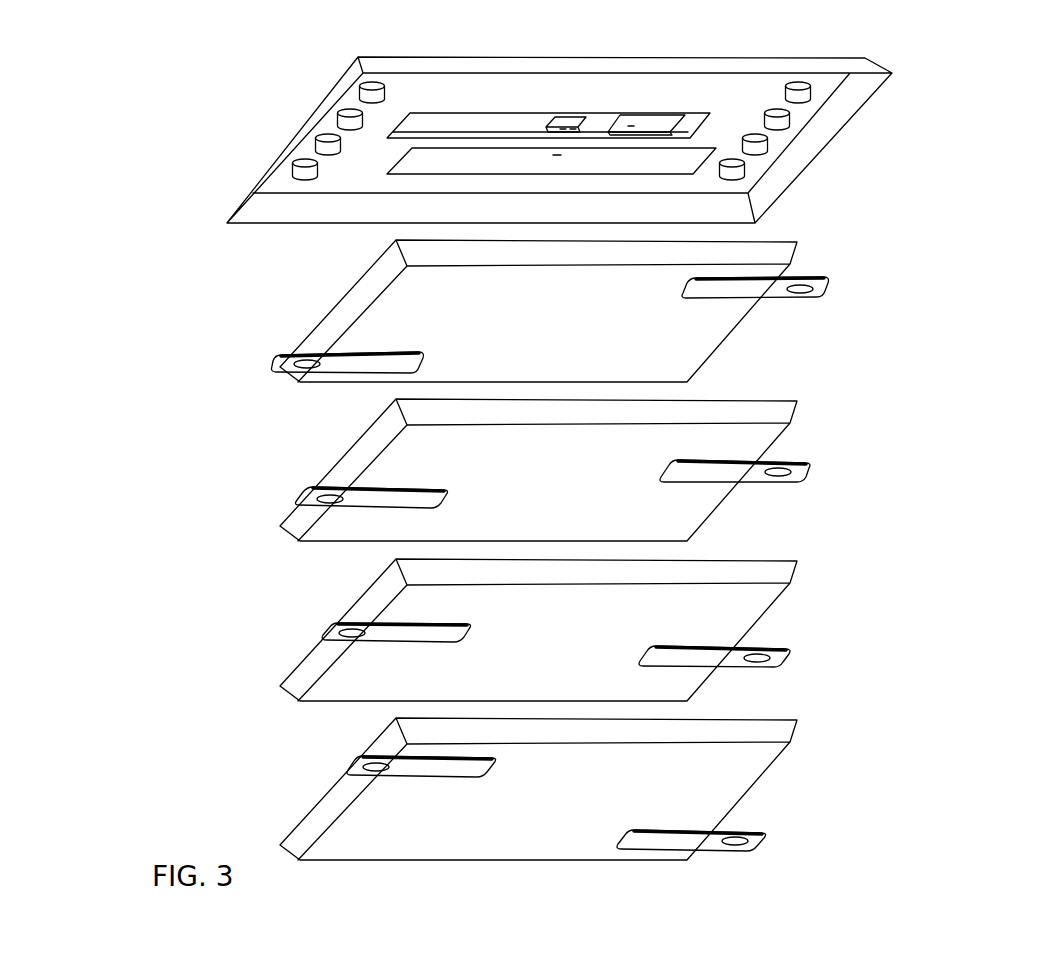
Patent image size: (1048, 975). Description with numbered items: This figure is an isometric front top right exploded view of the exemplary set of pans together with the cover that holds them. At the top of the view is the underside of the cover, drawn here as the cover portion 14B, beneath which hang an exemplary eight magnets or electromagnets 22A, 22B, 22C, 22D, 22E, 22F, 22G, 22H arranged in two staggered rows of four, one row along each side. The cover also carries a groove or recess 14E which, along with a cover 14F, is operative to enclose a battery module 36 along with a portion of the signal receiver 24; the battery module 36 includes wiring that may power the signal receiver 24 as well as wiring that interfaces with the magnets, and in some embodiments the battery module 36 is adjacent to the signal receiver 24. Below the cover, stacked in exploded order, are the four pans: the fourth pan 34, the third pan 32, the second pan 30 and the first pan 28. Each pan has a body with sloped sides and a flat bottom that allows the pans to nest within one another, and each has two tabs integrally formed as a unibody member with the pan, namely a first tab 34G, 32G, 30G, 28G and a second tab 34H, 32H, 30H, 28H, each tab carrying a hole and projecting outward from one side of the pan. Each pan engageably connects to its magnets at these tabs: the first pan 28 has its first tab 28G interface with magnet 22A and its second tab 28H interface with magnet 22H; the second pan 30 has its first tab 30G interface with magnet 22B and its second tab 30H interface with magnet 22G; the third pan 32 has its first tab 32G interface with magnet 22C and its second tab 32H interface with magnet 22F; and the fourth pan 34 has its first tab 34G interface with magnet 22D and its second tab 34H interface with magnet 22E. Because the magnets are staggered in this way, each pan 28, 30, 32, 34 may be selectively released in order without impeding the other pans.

The upper housing wall 14B is at (453, 92).
The groove or recess 14E is at (522, 125).
The cover 14F is at (422, 162).
The signal receiver 24 is at (575, 125).
The battery module 36 is at (658, 130).
The magnet 22A is at (366, 93).
The magnet 22B is at (340, 118).
The magnet 22C is at (318, 146).
The magnet 22D is at (295, 168).
The magnet 22E is at (808, 92).
The magnet 22F is at (788, 120).
The magnet 22G is at (767, 145).
The magnet 22H is at (744, 170).
The fourth pan 34 is at (702, 330).
The first tab 34G is at (275, 362).
The second tab 34H is at (830, 293).
The third pan 32 is at (688, 512).
The first tab 32G is at (305, 492).
The second tab 32H is at (812, 474).
The second pan 30 is at (762, 595).
The first tab 30G is at (330, 623).
The second tab 30H is at (787, 660).
The first pan 28 is at (742, 777).
The first tab 28G is at (352, 762).
The second tab 28H is at (767, 840).